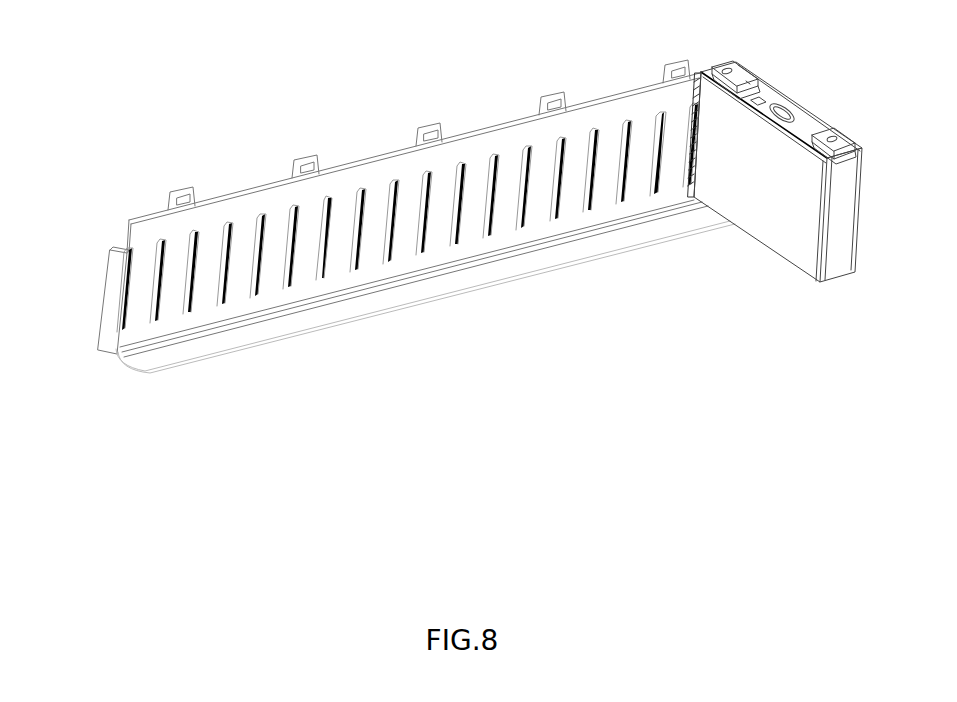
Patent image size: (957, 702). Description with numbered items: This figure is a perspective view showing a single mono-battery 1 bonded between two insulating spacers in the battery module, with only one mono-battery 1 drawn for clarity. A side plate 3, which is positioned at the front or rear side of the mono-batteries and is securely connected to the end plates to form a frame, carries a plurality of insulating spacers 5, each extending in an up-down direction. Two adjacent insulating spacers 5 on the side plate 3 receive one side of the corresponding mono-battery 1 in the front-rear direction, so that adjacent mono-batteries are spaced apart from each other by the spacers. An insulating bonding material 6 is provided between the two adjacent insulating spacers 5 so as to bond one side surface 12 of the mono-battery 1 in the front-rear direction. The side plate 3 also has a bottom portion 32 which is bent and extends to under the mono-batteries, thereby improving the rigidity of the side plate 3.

The mono-battery 1 is at (815, 152).
The side surface 12 is at (845, 198).
The side plate 3 is at (512, 118).
The insulating spacer 5 is at (390, 217).
The insulating bonding material 6 is at (695, 106).
The bottom portion 32 is at (257, 348).